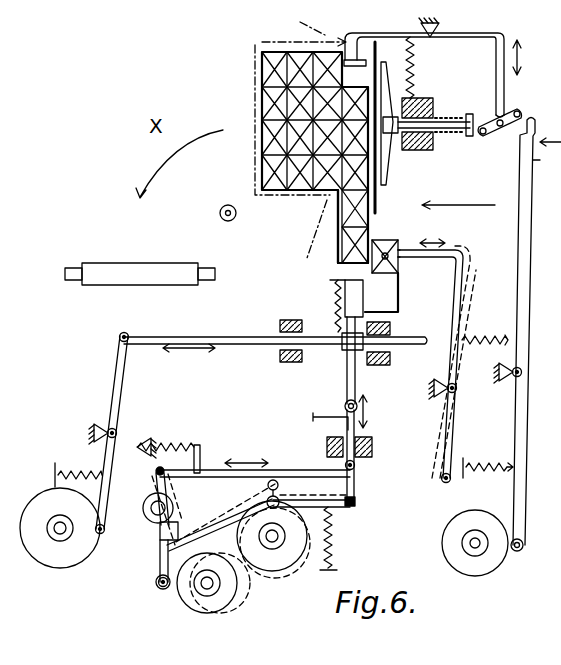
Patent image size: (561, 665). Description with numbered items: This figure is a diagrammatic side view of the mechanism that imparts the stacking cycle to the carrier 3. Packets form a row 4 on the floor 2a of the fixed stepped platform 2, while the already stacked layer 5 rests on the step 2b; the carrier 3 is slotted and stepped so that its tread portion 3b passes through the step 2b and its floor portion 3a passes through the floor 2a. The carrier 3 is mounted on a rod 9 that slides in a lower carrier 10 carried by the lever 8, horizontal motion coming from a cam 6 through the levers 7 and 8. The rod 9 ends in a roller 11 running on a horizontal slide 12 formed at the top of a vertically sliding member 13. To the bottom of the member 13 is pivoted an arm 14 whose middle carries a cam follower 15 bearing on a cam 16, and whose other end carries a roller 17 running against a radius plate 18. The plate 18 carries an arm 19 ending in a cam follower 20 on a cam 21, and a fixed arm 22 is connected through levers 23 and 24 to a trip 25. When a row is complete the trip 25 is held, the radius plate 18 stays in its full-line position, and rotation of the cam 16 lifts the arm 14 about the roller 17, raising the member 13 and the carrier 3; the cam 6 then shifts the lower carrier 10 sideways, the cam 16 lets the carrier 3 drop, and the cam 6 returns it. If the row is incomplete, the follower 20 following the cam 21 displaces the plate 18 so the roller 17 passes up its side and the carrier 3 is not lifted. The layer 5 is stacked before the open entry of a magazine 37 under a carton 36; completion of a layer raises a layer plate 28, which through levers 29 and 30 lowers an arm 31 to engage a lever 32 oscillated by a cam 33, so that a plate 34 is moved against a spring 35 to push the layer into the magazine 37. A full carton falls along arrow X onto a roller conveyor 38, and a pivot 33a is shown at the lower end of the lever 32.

The stepped platform 2 is at (540, 133).
The floor 2a is at (398, 256).
The step 2b is at (333, 262).
The carrier 3 is at (540, 160).
The floor portion 3a is at (400, 312).
The tread portion 3b is at (330, 282).
The row 4 is at (392, 242).
The layer 5 is at (340, 243).
The cam 6 is at (58, 552).
The lever 7 is at (118, 372).
The lever 8 is at (222, 337).
The rod 9 is at (342, 332).
The lower carrier 10 is at (345, 350).
The roller 11 is at (358, 406).
The horizontal slide 12 is at (313, 417).
The vertically sliding member 13 is at (355, 432).
The arm 14 is at (228, 518).
The cam follower 15 is at (280, 508).
The cam 16 is at (283, 565).
The roller 17 is at (165, 540).
The radius plate 18 is at (156, 516).
The arm 19 is at (159, 580).
The cam follower 20 is at (160, 587).
The cam 21 is at (188, 592).
The arm 22 is at (156, 482).
The lever 23 is at (298, 470).
The lever 24 is at (455, 438).
The trip 25 is at (372, 236).
The layer plate 28 is at (348, 33).
The lever 29 is at (404, 36).
The lever 30 is at (505, 88).
The arm 31 is at (512, 126).
The lever 32 is at (527, 248).
The cam 33 is at (480, 560).
The pivot 33a is at (522, 549).
The plate 34 is at (388, 168).
The spring 35 is at (442, 136).
The carton 36 is at (262, 48).
The magazine 37 is at (280, 42).
The roller conveyor 38 is at (156, 264).